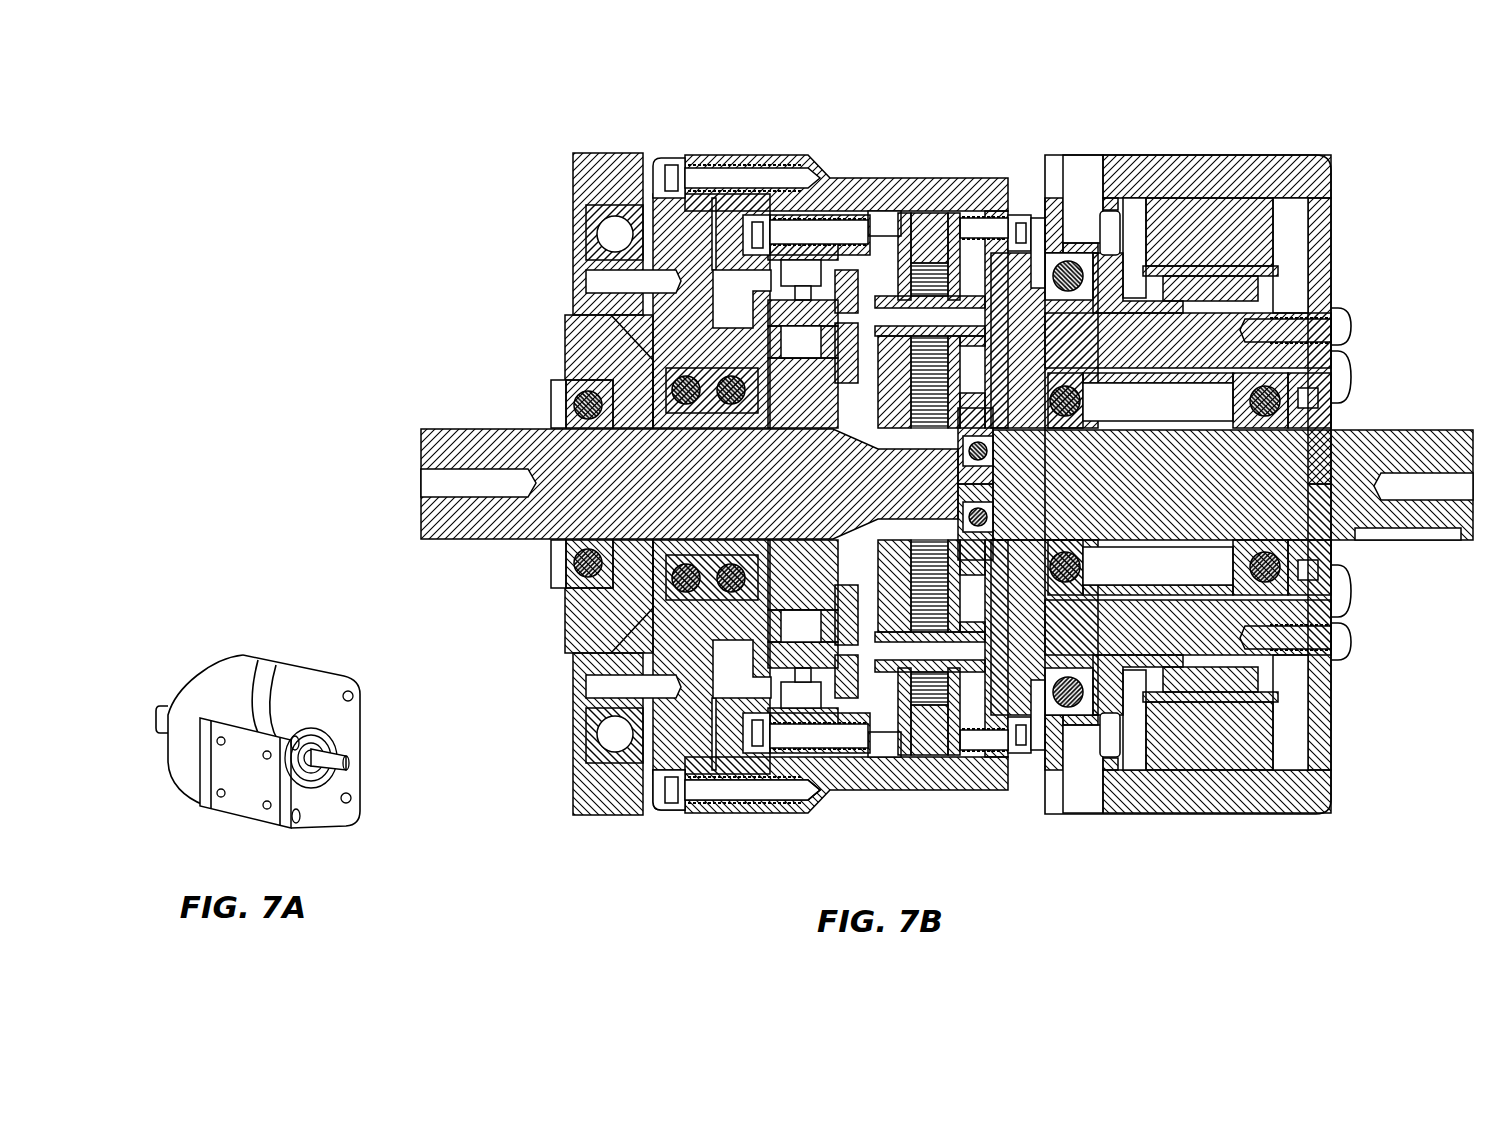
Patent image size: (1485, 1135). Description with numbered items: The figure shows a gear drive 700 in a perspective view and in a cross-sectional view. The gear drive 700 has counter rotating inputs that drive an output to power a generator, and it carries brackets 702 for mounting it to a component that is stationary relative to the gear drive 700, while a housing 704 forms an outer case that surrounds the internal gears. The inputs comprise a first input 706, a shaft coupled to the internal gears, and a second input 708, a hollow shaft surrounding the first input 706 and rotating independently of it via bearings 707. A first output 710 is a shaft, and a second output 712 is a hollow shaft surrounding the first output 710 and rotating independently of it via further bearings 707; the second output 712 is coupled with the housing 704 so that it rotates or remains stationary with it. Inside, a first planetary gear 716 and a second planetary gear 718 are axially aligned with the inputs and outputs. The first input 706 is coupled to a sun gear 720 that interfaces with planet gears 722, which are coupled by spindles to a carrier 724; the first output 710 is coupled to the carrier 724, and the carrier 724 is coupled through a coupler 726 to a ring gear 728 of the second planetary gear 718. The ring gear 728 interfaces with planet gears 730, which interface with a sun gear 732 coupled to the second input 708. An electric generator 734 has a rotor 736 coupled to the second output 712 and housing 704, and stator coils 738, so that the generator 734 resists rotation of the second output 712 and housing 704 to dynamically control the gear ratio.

In FIG. 7A, the gear drive 700 is at (197, 612).
In FIG. 7B, the gear drive 700 is at (460, 117).
In FIG. 7A, the brackets 702 is at (195, 752).
In FIG. 7B, the brackets 702 is at (585, 170).
In FIG. 7A, the housing 704 is at (262, 690).
In FIG. 7B, the housing 704 is at (918, 170).
In FIG. 7A, the first input 706 is at (330, 747).
In FIG. 7B, the first input 706 is at (452, 418).
In FIG. 7B, the bearings 707 is at (612, 355).
In FIG. 7B, the second input 708 is at (556, 345).
In FIG. 7B, the first output 710 is at (1343, 467).
In FIG. 7B, the second output 712 is at (1340, 350).
In FIG. 7B, the first planetary gear 716 is at (893, 213).
In FIG. 7B, the second planetary gear 718 is at (758, 207).
In FIG. 7B, the sun gear 720 is at (955, 620).
In FIG. 7B, the planet gears 722 is at (898, 660).
In FIG. 7B, the carrier 724 is at (870, 700).
In FIG. 7B, the coupler 726 is at (812, 797).
In FIG. 7B, the ring gear 728 is at (765, 800).
In FIG. 7B, the planet gears 730 is at (710, 803).
In FIG. 7B, the sun gear 732 is at (682, 796).
In FIG. 7A, the electric generator 734 is at (183, 693).
In FIG. 7B, the electric generator 734 is at (1340, 780).
In FIG. 7B, the rotor 736 is at (1293, 147).
In FIG. 7B, the stator coils 738 is at (1220, 742).